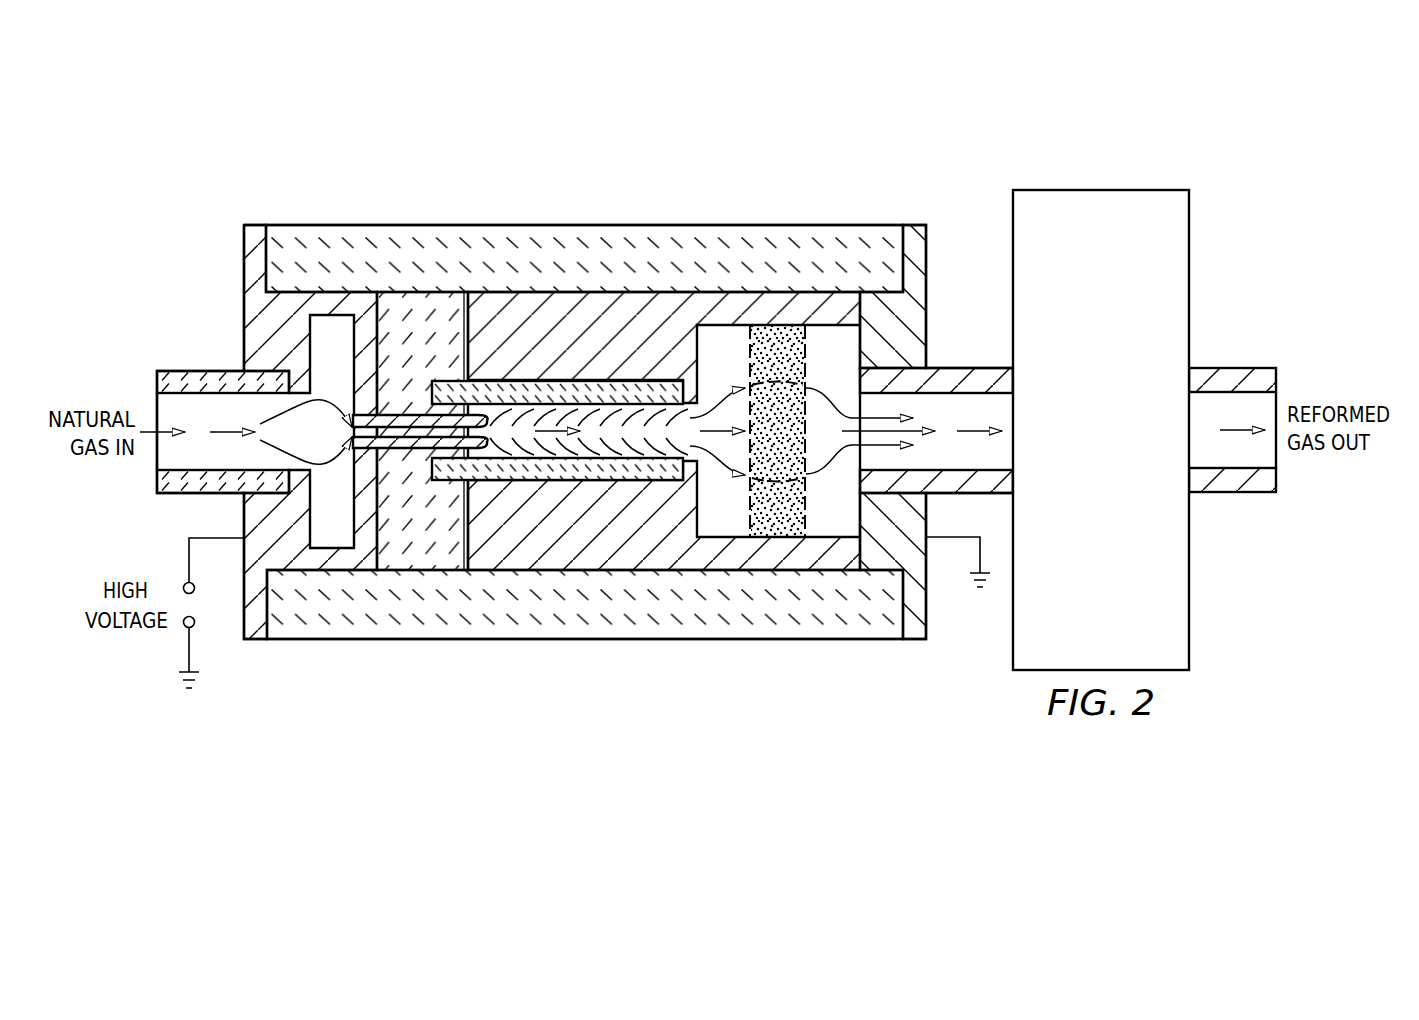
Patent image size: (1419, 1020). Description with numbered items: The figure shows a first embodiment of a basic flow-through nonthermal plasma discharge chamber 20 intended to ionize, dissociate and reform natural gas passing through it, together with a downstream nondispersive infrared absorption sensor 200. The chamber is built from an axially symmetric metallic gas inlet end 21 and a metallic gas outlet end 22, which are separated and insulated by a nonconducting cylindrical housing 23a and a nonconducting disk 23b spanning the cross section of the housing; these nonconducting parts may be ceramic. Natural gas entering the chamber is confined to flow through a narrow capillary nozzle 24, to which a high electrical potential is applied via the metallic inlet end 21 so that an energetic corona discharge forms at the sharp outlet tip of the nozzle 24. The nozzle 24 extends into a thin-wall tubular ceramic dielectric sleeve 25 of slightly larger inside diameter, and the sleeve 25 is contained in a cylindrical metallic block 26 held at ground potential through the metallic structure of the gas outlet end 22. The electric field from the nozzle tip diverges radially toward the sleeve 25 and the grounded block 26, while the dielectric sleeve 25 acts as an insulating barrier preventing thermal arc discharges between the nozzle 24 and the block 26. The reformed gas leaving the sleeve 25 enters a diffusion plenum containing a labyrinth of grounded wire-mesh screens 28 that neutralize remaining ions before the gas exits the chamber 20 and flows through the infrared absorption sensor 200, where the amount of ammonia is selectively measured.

The nonthermal plasma discharge chamber 20 is at (862, 86).
The metallic gas inlet end 21 is at (250, 303).
The metallic gas outlet end 22 is at (918, 253).
The nonconducting cylindrical housing 23a is at (783, 231).
The nonconducting disk 23b is at (403, 562).
The capillary nozzle 24 is at (420, 424).
The tubular ceramic dielectric sleeve 25 is at (495, 382).
The cylindrical metallic block 26 is at (637, 298).
The grounded wire-mesh screens 28 is at (780, 525).
The nondispersive infrared absorption sensor 200 is at (1120, 561).